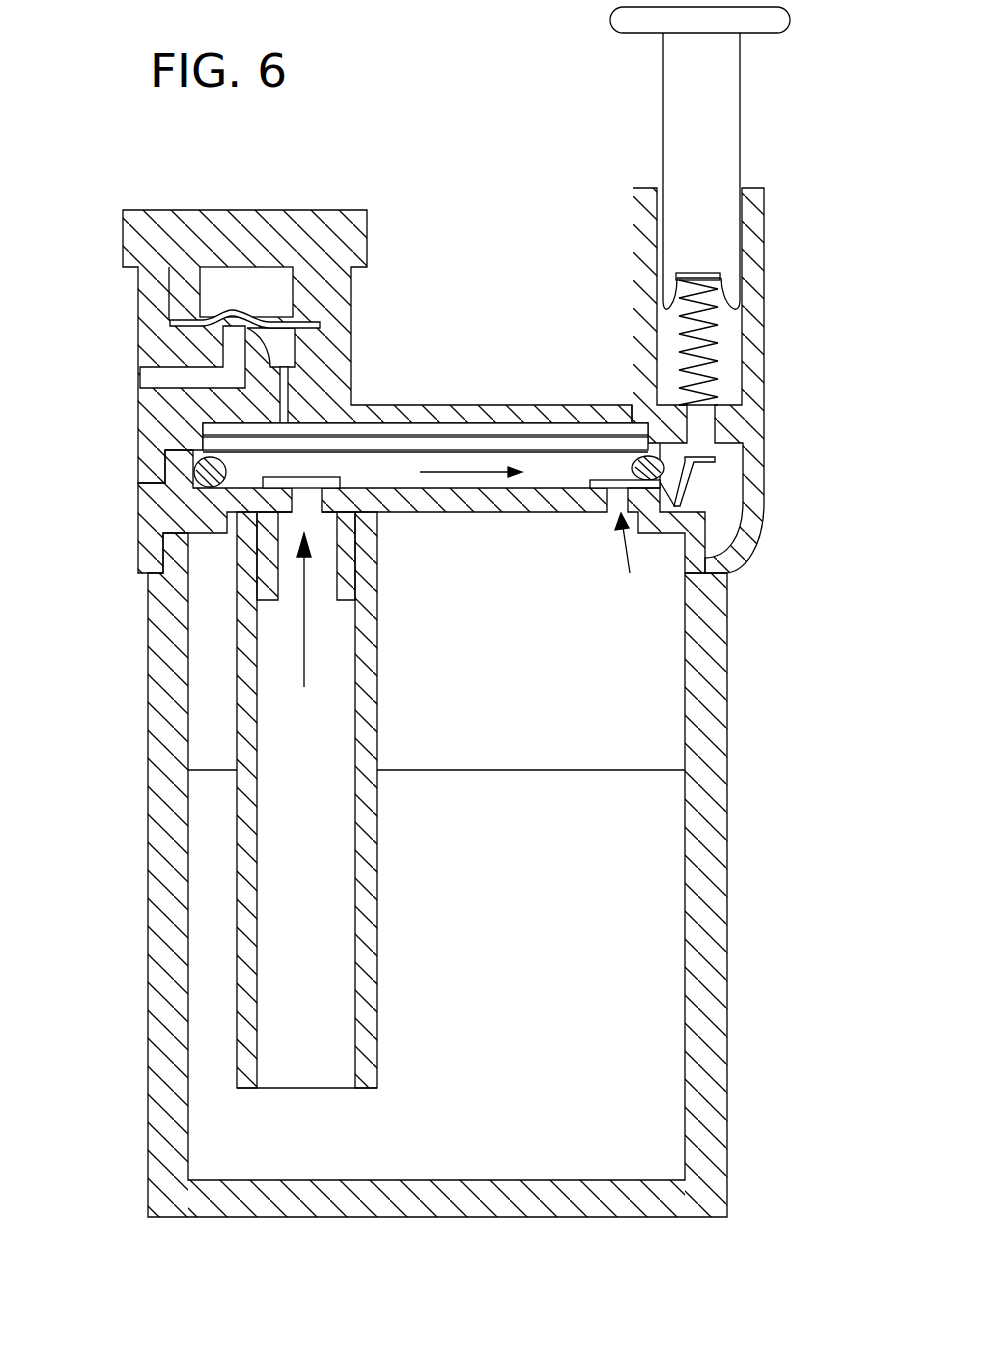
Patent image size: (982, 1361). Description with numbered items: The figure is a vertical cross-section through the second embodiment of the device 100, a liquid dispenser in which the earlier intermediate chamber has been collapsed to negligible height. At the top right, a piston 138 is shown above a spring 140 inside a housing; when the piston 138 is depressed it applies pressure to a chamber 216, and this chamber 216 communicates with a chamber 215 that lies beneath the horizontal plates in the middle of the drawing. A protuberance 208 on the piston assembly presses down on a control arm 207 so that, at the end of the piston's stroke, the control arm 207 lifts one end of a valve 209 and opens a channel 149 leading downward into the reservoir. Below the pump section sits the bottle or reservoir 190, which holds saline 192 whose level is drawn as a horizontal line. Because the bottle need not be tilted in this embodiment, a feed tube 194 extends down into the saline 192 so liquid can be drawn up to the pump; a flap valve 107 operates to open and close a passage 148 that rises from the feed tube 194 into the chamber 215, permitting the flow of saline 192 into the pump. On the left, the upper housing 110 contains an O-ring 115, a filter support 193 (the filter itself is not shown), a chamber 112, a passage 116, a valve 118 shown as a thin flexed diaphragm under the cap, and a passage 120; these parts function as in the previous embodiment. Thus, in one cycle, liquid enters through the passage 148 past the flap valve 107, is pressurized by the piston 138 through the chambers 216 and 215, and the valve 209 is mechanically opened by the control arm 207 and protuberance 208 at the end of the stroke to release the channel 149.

The device 100 is at (787, 628).
The flap valve 107 is at (346, 463).
The upper housing 110 is at (125, 334).
The chamber 112 is at (505, 424).
The O-ring 115 is at (193, 472).
The passage 116 is at (283, 408).
The valve 118 is at (240, 312).
The passage 120 is at (172, 369).
The piston 138 is at (684, 97).
The spring 140 is at (717, 348).
The passage 148 is at (308, 505).
The channel 149 is at (653, 549).
The reservoir 190 is at (158, 667).
The saline 192 is at (642, 903).
The filter support 193 is at (442, 449).
The feed tube 194 is at (378, 715).
The control arm 207 is at (693, 478).
The protuberance 208 is at (683, 327).
The valve 209 is at (596, 468).
The chamber 215 is at (530, 478).
The chamber 216 is at (728, 470).